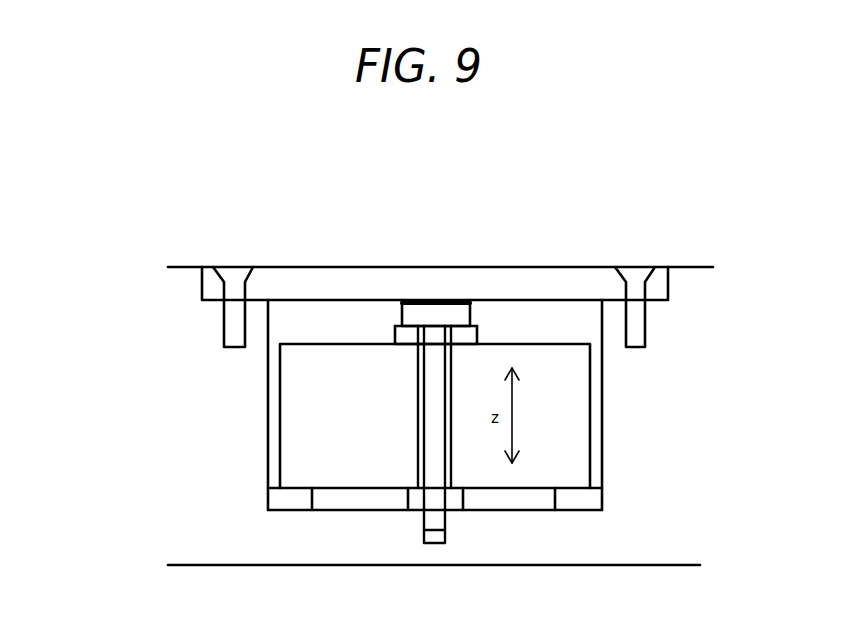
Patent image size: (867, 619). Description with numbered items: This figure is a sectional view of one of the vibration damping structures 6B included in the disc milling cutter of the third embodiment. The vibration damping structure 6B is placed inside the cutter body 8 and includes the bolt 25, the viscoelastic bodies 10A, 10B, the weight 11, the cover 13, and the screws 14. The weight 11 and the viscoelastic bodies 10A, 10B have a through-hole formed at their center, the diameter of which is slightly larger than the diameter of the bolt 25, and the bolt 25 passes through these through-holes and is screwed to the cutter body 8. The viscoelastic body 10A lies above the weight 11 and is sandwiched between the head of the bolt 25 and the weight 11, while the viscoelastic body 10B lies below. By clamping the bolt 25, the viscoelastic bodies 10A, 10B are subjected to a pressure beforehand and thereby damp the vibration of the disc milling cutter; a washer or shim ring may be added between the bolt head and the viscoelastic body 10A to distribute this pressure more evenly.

The vibration damping structure 6B is at (427, 248).
The cutter body 8 is at (190, 509).
The viscoelastic body 10A is at (467, 335).
The viscoelastic body 10B is at (533, 502).
The weight 11 is at (300, 443).
The cover 13 is at (557, 288).
The screw 14 is at (233, 277).
The bolt 25 is at (421, 309).